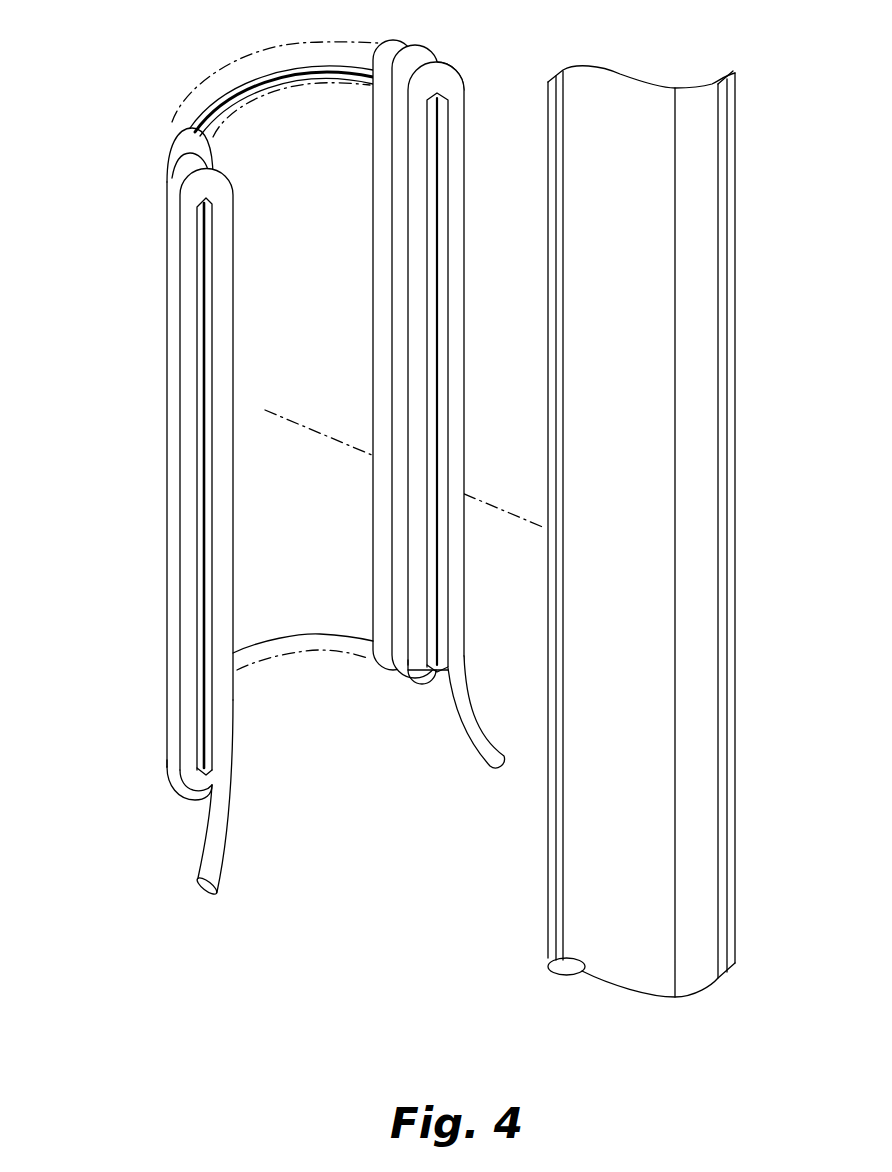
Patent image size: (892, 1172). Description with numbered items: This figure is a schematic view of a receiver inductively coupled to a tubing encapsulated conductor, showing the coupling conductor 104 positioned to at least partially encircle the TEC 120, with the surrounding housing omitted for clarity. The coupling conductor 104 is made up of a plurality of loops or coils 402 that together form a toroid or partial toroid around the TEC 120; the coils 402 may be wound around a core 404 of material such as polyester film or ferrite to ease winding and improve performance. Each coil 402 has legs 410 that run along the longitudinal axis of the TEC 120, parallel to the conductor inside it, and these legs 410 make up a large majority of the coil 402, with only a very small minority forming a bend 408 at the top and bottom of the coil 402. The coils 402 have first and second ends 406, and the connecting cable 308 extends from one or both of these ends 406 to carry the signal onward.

The coupling conductor 104 is at (453, 348).
The TEC 120 is at (725, 148).
The connecting cable 308 is at (228, 845).
The coils 402 is at (178, 420).
The core 404 is at (302, 613).
The first and second ends 406 is at (166, 782).
The bend 408 is at (177, 150).
The legs 410 is at (187, 598).